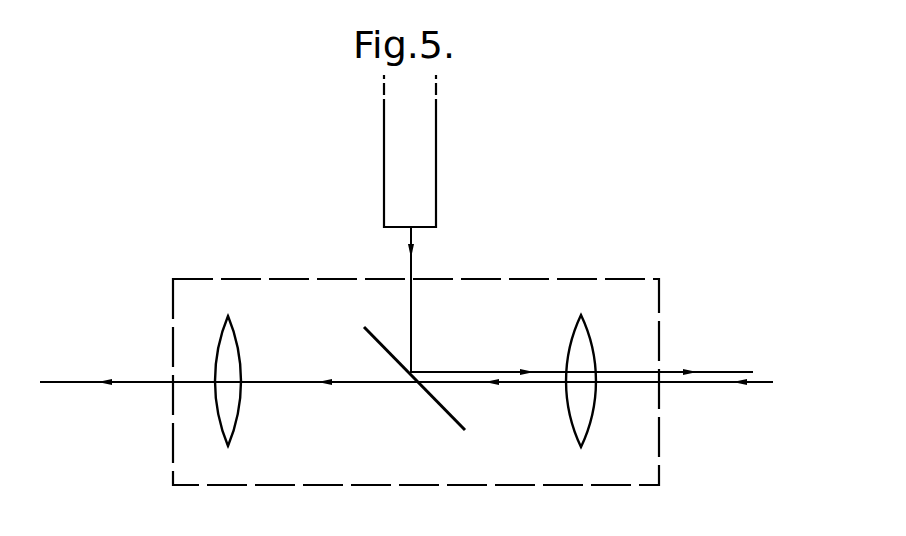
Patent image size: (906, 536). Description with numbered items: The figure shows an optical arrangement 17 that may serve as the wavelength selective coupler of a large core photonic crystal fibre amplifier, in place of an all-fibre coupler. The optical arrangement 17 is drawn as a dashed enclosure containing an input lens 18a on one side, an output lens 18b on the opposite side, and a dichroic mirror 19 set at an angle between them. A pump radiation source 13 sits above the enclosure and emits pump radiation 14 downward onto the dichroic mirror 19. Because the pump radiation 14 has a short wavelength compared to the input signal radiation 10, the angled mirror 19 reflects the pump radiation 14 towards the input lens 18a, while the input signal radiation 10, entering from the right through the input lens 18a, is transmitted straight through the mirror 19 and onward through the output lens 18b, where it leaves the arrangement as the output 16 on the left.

The input signal radiation 10 is at (758, 384).
The pump radiation source 13 is at (436, 178).
The pump radiation 14 is at (413, 270).
The output beam 16 is at (63, 383).
The optical arrangement 17 is at (609, 279).
The input lens 18a is at (584, 446).
The output lens 18b is at (228, 446).
The dichroic mirror 19 is at (448, 418).